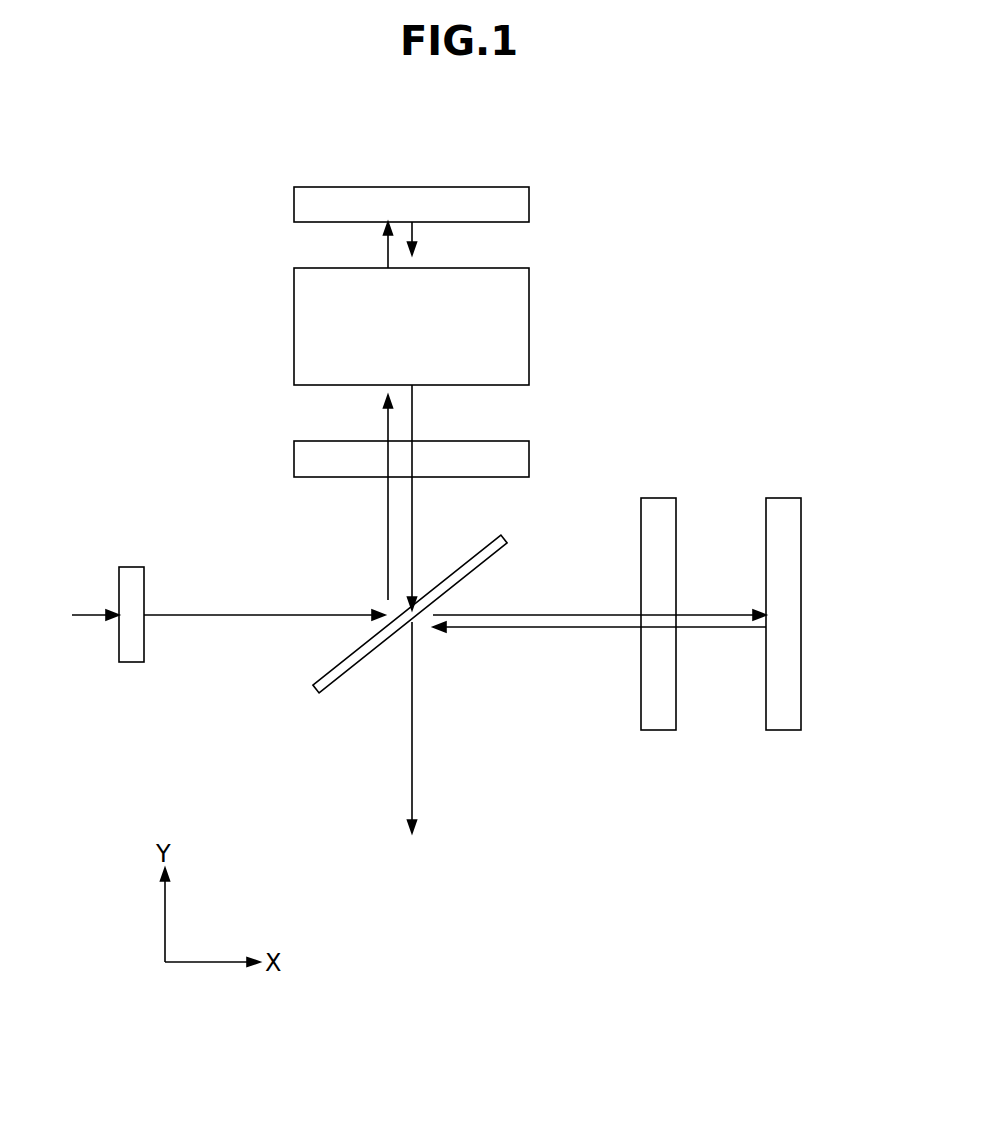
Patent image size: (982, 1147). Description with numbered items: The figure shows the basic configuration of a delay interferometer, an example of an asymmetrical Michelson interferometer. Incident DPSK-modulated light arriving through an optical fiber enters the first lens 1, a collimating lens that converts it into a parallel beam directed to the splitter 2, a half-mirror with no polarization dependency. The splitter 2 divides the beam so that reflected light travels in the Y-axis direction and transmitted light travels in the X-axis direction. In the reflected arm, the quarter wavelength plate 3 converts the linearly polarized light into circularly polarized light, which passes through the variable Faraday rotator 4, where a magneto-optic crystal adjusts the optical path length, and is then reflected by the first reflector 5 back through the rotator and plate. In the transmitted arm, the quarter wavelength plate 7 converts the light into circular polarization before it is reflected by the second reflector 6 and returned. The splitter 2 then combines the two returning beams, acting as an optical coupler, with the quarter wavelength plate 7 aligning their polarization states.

The first lens 1 is at (138, 567).
The splitter 2 is at (504, 535).
The quarter wavelength plate 3 is at (529, 456).
The variable Faraday rotator 4 is at (529, 315).
The first reflector 5 is at (529, 206).
The second reflector 6 is at (785, 498).
The quarter wavelength plate 7 is at (660, 498).